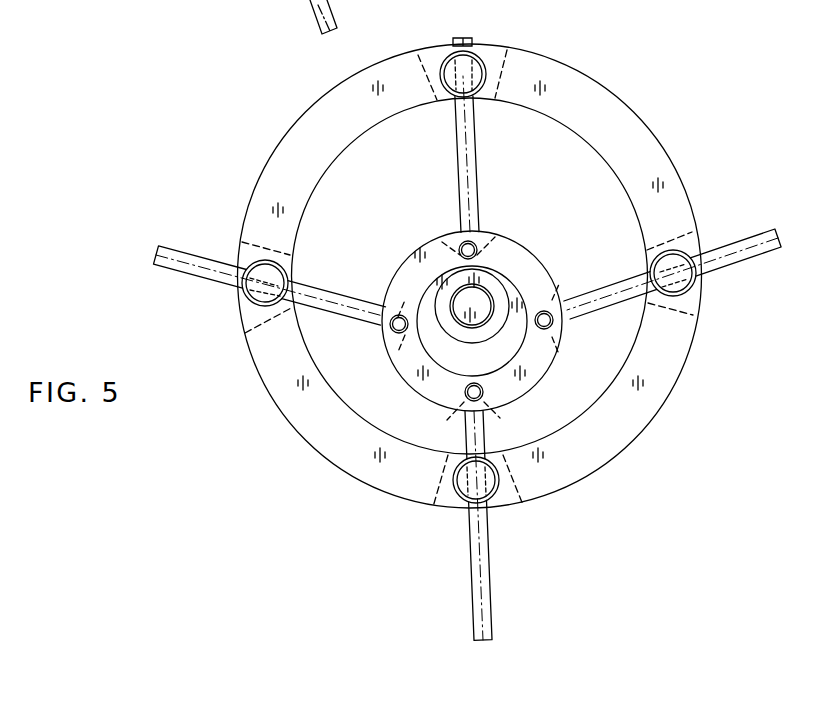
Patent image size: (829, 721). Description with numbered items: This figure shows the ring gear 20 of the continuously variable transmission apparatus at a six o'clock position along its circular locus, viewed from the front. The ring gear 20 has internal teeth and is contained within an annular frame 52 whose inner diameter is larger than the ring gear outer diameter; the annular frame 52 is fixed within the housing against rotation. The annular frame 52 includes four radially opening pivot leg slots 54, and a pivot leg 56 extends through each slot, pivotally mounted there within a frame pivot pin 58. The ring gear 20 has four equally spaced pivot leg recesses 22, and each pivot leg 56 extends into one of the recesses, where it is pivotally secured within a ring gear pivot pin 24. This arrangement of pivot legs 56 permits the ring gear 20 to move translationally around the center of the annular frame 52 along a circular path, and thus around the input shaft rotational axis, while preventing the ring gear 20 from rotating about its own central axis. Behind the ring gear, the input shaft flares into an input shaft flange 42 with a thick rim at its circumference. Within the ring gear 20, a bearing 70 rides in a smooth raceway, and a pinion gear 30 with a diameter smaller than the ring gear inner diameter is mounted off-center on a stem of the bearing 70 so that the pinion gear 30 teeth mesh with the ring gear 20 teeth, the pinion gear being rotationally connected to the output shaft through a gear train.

The ring gear 20 is at (530, 373).
The pivot leg recesses 22 is at (490, 241).
The ring gear pivot pin 24 is at (462, 248).
The pinion gear 30 is at (502, 298).
The input shaft flange 42 is at (387, 193).
The annular frame 52 is at (300, 130).
The pivot leg slots 54 is at (493, 50).
The pivot leg 56 is at (473, 140).
The frame pivot pin 58 is at (445, 72).
The bearing 70 is at (460, 300).